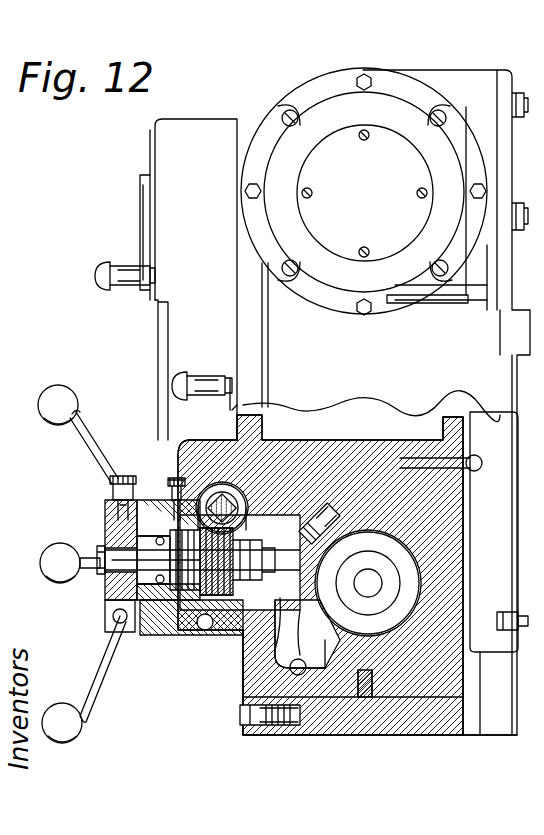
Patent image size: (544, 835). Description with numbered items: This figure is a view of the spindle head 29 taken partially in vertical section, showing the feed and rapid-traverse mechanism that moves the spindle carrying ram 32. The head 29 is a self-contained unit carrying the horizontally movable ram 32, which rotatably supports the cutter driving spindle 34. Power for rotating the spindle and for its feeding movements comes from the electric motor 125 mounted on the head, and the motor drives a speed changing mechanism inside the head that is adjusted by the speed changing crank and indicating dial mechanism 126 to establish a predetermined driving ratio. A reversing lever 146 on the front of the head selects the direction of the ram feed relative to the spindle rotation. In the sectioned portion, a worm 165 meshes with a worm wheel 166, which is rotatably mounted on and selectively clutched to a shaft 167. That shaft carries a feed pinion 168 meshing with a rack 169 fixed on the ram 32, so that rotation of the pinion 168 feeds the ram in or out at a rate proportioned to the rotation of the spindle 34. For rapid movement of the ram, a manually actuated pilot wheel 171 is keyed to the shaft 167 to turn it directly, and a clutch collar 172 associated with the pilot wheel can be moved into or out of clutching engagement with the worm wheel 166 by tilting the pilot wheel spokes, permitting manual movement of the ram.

The spindle head 29 is at (200, 132).
The electric motor 125 is at (388, 103).
The speed changing crank and indicating dial mechanism 126 is at (92, 271).
The reversing lever 146 is at (190, 375).
The pilot wheel 171 is at (62, 386).
The worm 165 is at (162, 497).
The rack 169 is at (315, 500).
The cutter driving spindle 34 is at (395, 580).
The shaft 167 is at (237, 568).
The feed pinion 168 is at (292, 626).
The clutch collar 172 is at (180, 615).
The worm wheel 166 is at (216, 628).
The spindle carrying ram 32 is at (395, 688).